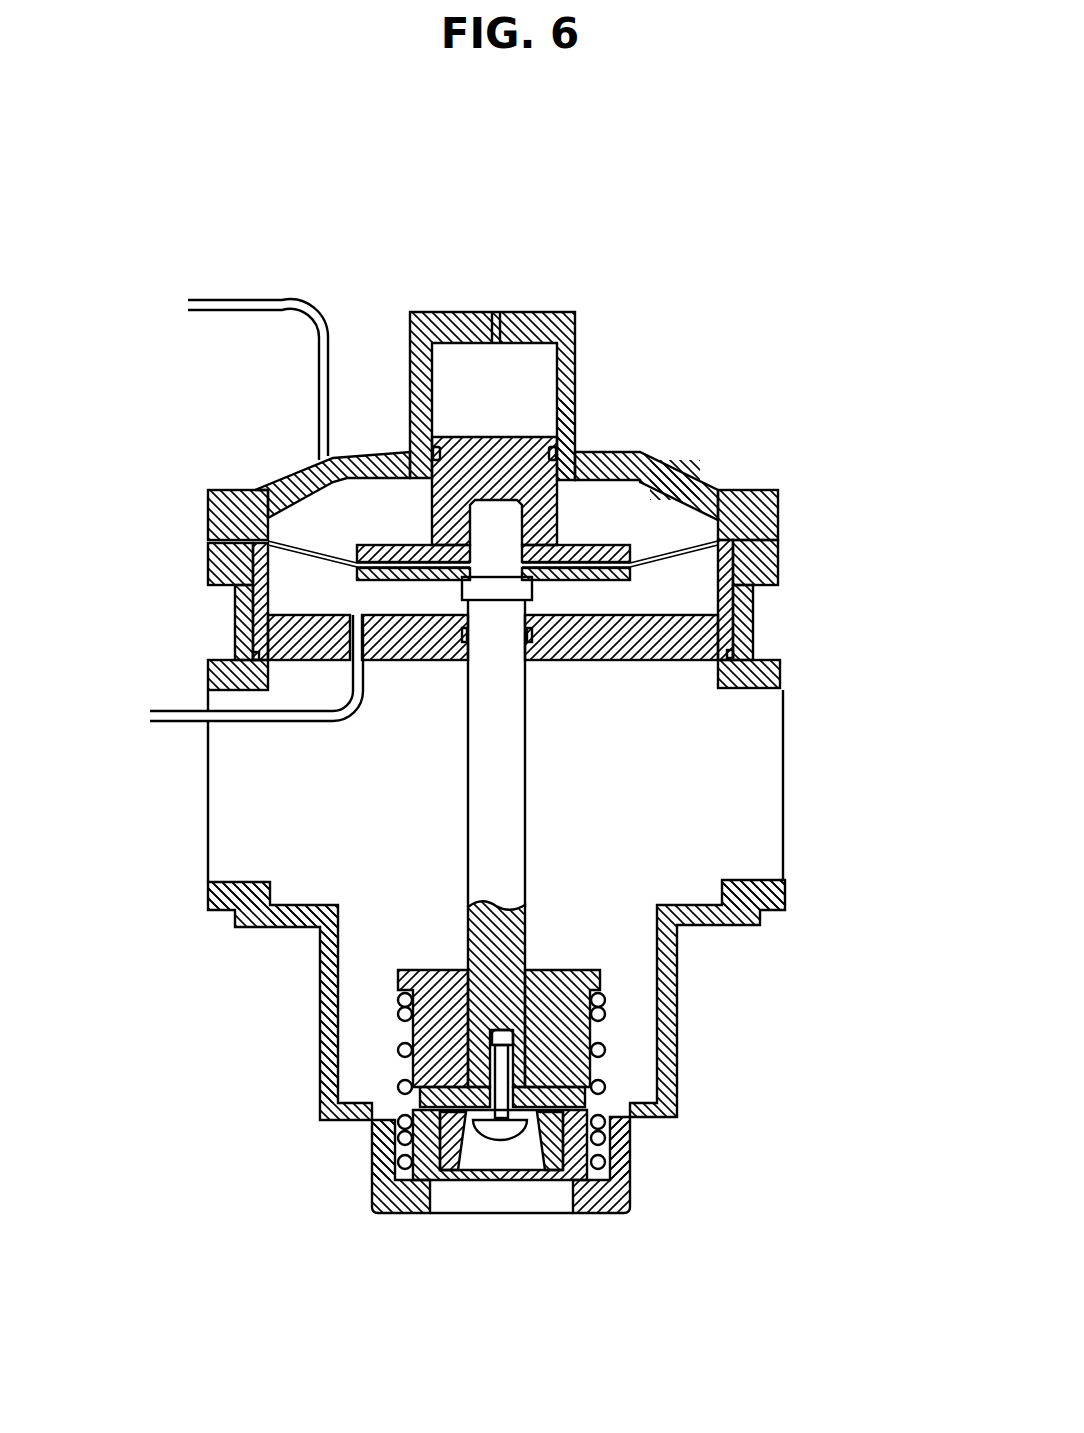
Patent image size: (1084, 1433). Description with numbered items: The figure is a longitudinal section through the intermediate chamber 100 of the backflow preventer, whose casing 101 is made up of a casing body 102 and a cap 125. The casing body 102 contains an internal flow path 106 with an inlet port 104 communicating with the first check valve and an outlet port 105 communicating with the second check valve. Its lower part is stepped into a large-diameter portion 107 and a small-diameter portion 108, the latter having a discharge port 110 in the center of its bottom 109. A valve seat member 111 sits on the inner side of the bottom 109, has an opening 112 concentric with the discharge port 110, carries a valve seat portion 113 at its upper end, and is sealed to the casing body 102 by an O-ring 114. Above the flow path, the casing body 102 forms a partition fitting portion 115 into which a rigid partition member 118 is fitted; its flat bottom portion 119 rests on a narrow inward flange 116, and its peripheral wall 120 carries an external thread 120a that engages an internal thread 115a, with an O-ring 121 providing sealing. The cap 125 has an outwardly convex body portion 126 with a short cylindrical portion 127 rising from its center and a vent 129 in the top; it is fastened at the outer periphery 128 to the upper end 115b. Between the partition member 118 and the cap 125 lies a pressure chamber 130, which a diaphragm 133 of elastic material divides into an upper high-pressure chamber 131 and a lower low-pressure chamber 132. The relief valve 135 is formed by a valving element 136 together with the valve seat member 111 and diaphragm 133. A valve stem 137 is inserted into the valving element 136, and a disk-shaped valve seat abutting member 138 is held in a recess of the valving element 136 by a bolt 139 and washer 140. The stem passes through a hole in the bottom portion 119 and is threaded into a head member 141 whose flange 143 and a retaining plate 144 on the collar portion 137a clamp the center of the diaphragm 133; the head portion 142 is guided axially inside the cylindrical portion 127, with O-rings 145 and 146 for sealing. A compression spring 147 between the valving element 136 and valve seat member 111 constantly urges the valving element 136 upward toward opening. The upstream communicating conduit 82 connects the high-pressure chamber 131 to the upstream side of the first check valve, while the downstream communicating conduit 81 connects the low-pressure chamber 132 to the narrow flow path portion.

The intermediate chamber 100 is at (702, 358).
The casing 101 is at (626, 440).
The casing body 102 is at (674, 1006).
The inlet port 104 is at (233, 878).
The outlet port 105 is at (765, 880).
The internal flow path 106 is at (320, 878).
The large-diameter portion 107 is at (323, 1078).
The small-diameter portion 108 is at (373, 1158).
The bottom 109 is at (392, 1215).
The discharge port 110 is at (435, 1217).
The valve seat member 111 is at (447, 1181).
The opening 112 is at (563, 1200).
The valve seat portion 113 is at (470, 1171).
The O-ring 114 is at (630, 1167).
The partition fitting portion 115 is at (240, 628).
The internal thread 115a is at (222, 548).
The upper end 115b is at (770, 566).
The inward flange 116 is at (725, 677).
The partition member 118 is at (725, 639).
The bottom portion 119 is at (630, 617).
The peripheral wall 120 is at (755, 600).
The external thread 120a is at (253, 573).
The O-ring 121 is at (753, 647).
The cap 125 is at (703, 487).
The body portion 126 is at (668, 549).
The cylindrical portion 127 is at (572, 355).
The outer periphery 128 is at (753, 503).
The vent 129 is at (492, 312).
The pressure chamber 130 is at (290, 513).
The high-pressure chamber 131 is at (390, 510).
The low-pressure chamber 132 is at (290, 604).
The diaphragm 133 is at (692, 505).
The relief valve 135 is at (566, 955).
The valving element 136 is at (398, 980).
The valve stem 137 is at (478, 928).
The collar portion 137a is at (463, 600).
The valve seat abutting member 138 is at (553, 1123).
The bolt 139 is at (503, 1133).
The washer 140 is at (527, 1123).
The head member 141 is at (482, 440).
The head portion 142 is at (437, 448).
The flange 143 is at (368, 545).
The retaining plate 144 is at (462, 584).
The O-ring 145 is at (532, 632).
The O-ring 146 is at (576, 446).
The compression spring 147 is at (605, 1050).
The downstream communicating conduit 81 is at (172, 722).
The upstream communicating conduit 82 is at (235, 302).